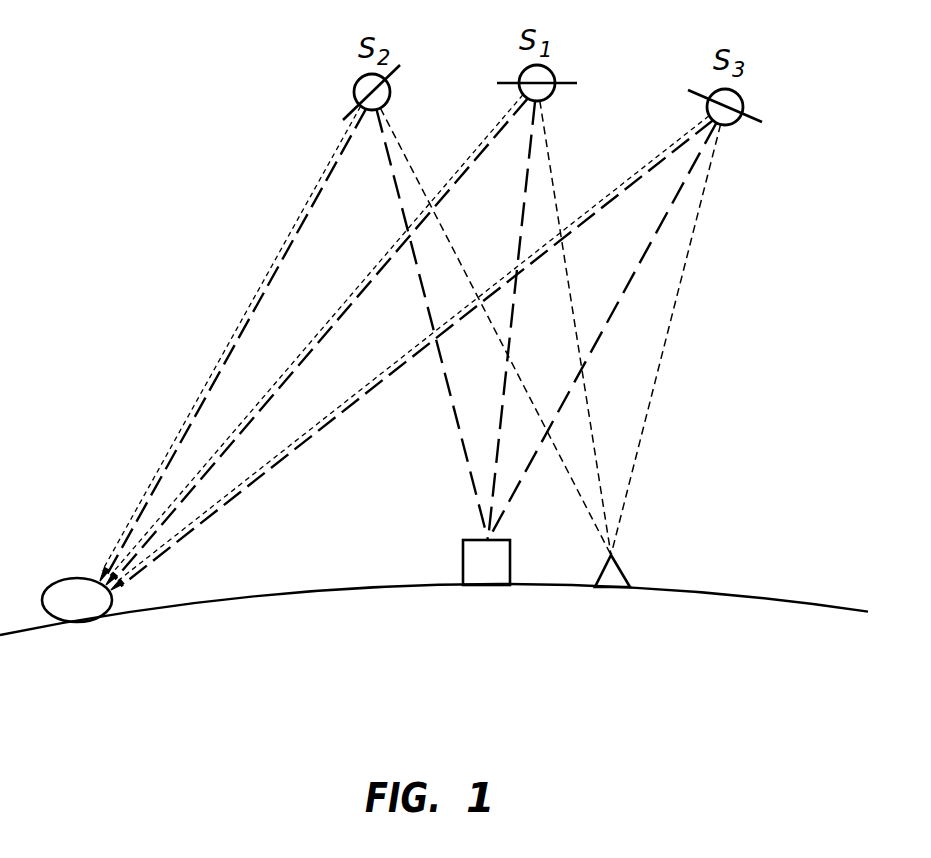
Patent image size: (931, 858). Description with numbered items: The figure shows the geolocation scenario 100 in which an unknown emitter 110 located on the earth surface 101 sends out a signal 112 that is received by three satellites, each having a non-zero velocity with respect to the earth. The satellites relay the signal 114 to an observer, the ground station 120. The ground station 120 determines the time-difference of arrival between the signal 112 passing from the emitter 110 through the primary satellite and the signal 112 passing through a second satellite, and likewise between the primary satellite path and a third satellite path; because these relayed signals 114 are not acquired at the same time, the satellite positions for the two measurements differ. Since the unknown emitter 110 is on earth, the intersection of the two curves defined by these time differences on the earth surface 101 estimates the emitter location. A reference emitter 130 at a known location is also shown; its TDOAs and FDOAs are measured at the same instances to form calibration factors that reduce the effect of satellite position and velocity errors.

The geolocation scenario 100 is at (139, 70).
The earth surface 101 is at (752, 598).
The unknown emitter 110 is at (624, 572).
The signal 112 is at (557, 455).
The relayed signal 114 is at (225, 498).
The ground station 120 is at (107, 610).
The reference emitter 130 is at (478, 588).